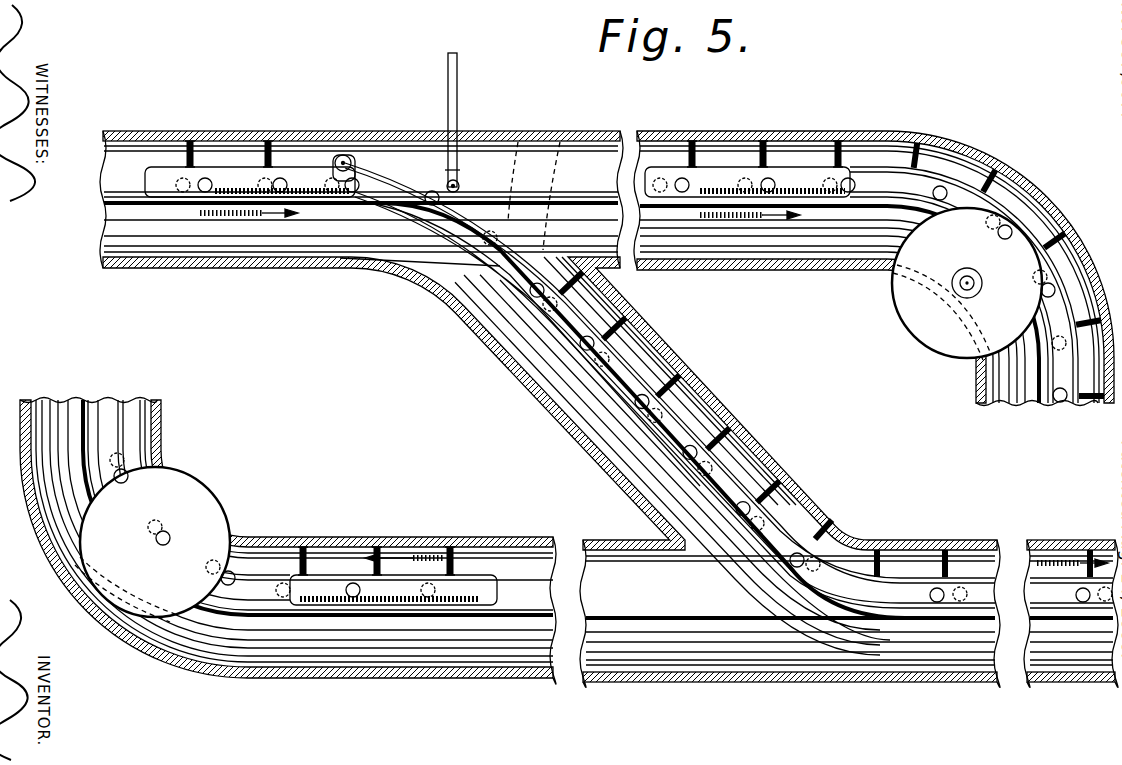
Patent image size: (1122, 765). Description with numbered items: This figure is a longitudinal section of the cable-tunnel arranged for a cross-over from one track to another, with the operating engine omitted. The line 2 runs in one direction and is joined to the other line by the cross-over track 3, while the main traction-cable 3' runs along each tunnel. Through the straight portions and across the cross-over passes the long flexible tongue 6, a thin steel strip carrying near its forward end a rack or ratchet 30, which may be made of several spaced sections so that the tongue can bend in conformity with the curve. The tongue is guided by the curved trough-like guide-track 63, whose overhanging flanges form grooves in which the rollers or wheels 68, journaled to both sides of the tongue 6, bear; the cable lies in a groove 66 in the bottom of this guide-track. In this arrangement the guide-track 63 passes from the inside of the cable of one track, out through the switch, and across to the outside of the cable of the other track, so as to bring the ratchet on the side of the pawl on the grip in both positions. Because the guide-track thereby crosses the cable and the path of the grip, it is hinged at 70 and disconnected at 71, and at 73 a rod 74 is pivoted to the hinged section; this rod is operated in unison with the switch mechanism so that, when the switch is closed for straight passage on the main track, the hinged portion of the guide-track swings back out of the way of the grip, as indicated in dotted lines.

The line 2 is at (1010, 404).
The cross-over track 3 is at (551, 472).
The main traction-cable 3' is at (593, 423).
The tongue 6 is at (1064, 404).
The rack or ratchet 30 is at (224, 186).
The guide-track 63 is at (532, 283).
The groove 66 is at (844, 180).
The rollers or wheels 68 is at (660, 406).
The hinge 70 is at (345, 154).
The disconnection point 71 is at (494, 268).
The pivot 73 is at (460, 186).
The rod 74 is at (458, 91).